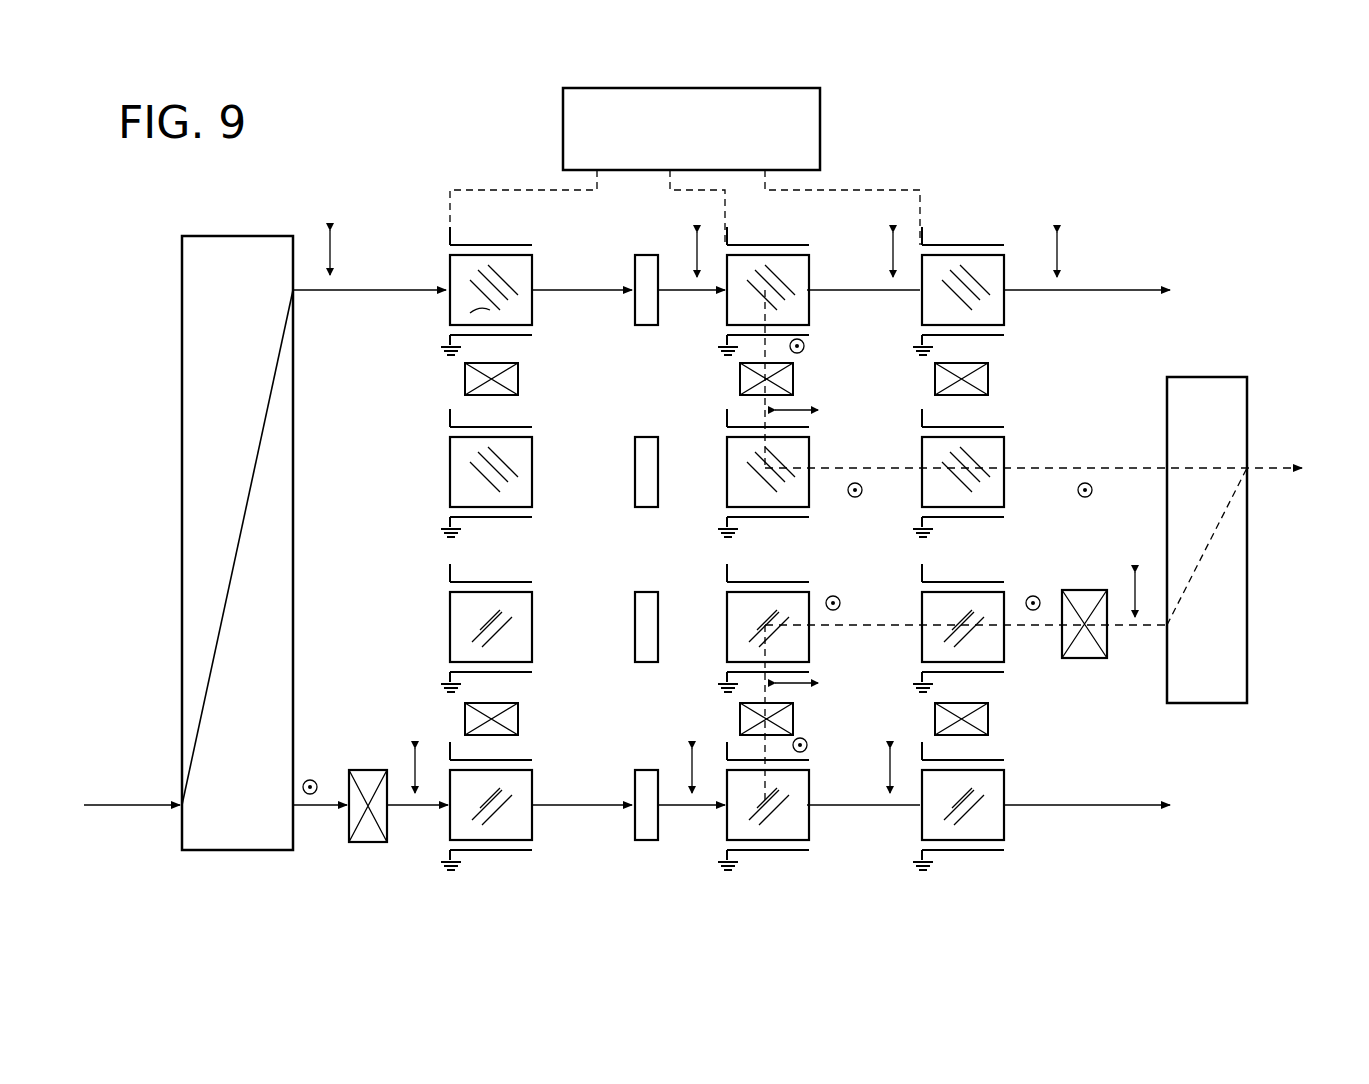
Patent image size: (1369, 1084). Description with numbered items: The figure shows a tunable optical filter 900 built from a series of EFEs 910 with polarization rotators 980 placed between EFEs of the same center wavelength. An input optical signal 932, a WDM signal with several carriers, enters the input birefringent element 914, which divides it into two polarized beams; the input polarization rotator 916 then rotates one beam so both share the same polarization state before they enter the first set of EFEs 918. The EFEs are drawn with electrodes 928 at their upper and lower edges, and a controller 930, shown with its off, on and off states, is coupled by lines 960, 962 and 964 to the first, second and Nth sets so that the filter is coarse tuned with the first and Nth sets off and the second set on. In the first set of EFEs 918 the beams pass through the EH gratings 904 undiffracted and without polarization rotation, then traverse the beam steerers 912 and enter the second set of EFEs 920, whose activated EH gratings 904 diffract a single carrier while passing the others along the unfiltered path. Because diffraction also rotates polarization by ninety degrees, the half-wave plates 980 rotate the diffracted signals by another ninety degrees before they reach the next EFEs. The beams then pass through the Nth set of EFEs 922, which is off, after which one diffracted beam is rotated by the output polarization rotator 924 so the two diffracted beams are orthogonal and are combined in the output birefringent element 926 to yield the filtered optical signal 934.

The tunable optical filter 900 is at (997, 125).
The EH gratings 904 is at (470, 313).
The EFEs 910 is at (448, 272).
The beam steerers 912 is at (647, 866).
The input birefringent element 914 is at (232, 850).
The input polarization rotator 916 is at (368, 845).
The first set of EFEs 918 is at (495, 567).
The second set of EFEs 920 is at (809, 883).
The Nth set of EFEs 922 is at (1004, 883).
The output polarization rotator 924 is at (1085, 660).
The output birefringent element 926 is at (1185, 703).
The electrode 928 is at (492, 245).
The controller 930 is at (820, 130).
The input optical signal 932 is at (152, 810).
The filtered optical signal 934 is at (1278, 468).
The control line to first stage 960 is at (496, 190).
The control line to second stage 962 is at (720, 193).
The control line to Nth stage 964 is at (900, 190).
The polarization rotators 980 is at (1016, 722).